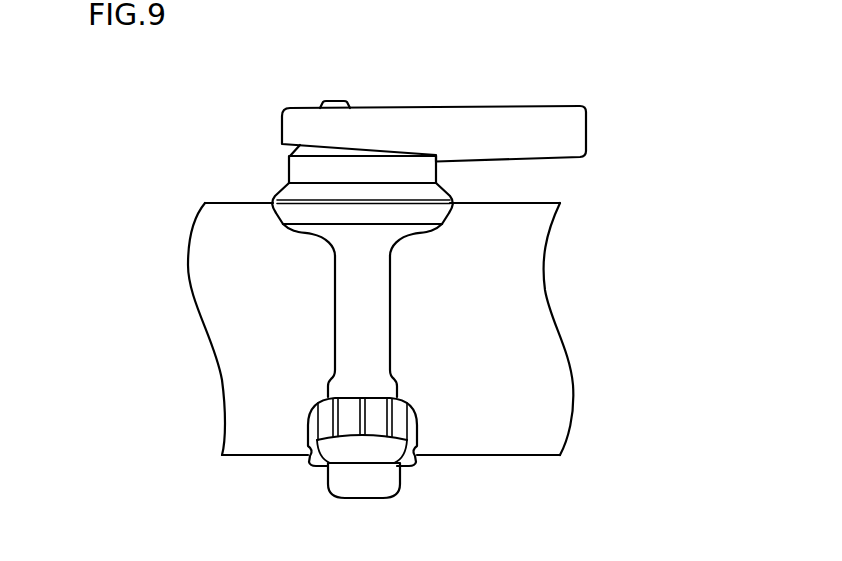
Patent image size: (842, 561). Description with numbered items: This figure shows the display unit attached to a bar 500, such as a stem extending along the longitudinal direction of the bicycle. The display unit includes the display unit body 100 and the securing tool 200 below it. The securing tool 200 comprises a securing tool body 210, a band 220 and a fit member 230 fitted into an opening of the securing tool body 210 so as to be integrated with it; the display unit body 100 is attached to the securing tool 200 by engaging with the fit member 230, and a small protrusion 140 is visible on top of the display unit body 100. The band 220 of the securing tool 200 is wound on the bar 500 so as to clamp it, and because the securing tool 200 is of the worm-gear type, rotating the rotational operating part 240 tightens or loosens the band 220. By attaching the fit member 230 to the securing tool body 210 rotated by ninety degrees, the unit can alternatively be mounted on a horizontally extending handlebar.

The display unit body 100 is at (524, 89).
The protrusion on lever 140 is at (337, 103).
The securing tool 200 is at (122, 172).
The fit member 230 is at (305, 170).
The securing tool body 210 is at (303, 203).
The band 220 is at (358, 322).
The rotational operating part 240 is at (323, 422).
The bar 500 is at (523, 333).